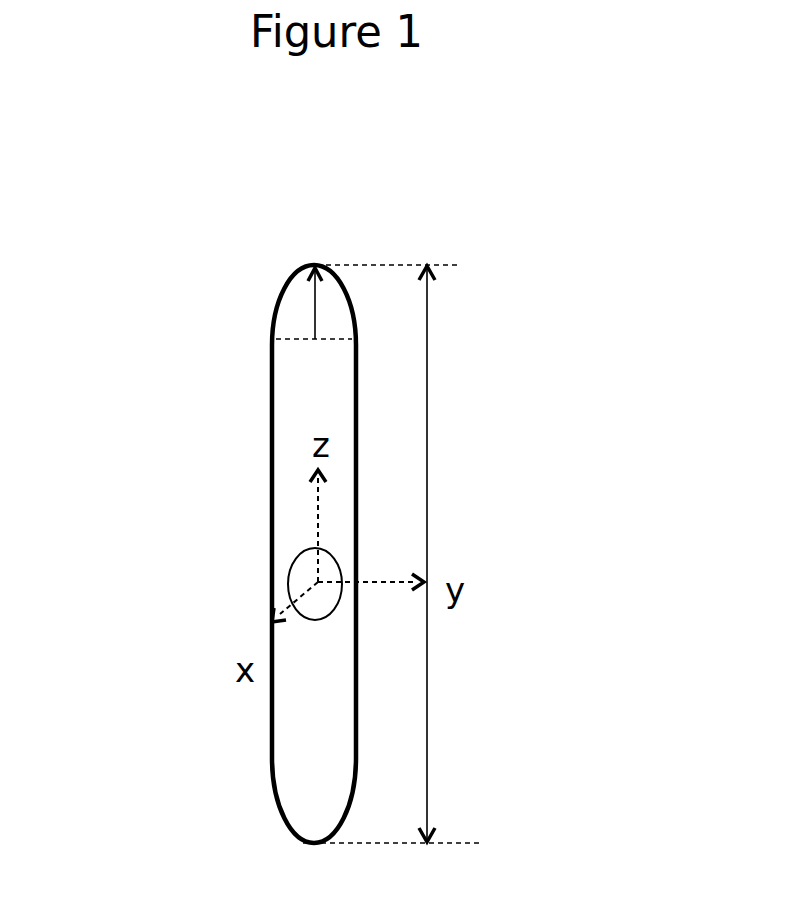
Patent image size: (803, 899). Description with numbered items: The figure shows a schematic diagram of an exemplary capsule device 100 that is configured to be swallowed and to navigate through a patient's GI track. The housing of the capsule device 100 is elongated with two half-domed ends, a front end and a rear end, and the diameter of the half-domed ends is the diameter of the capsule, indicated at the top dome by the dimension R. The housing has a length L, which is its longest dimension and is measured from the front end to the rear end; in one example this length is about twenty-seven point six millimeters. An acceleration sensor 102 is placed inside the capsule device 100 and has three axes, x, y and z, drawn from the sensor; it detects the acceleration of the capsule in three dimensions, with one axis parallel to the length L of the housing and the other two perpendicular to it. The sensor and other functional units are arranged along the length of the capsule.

The capsule device 100 is at (483, 216).
The acceleration sensor 102 is at (300, 581).
The length of capsule housing L is at (391, 554).
The radius of capsule end R is at (295, 317).